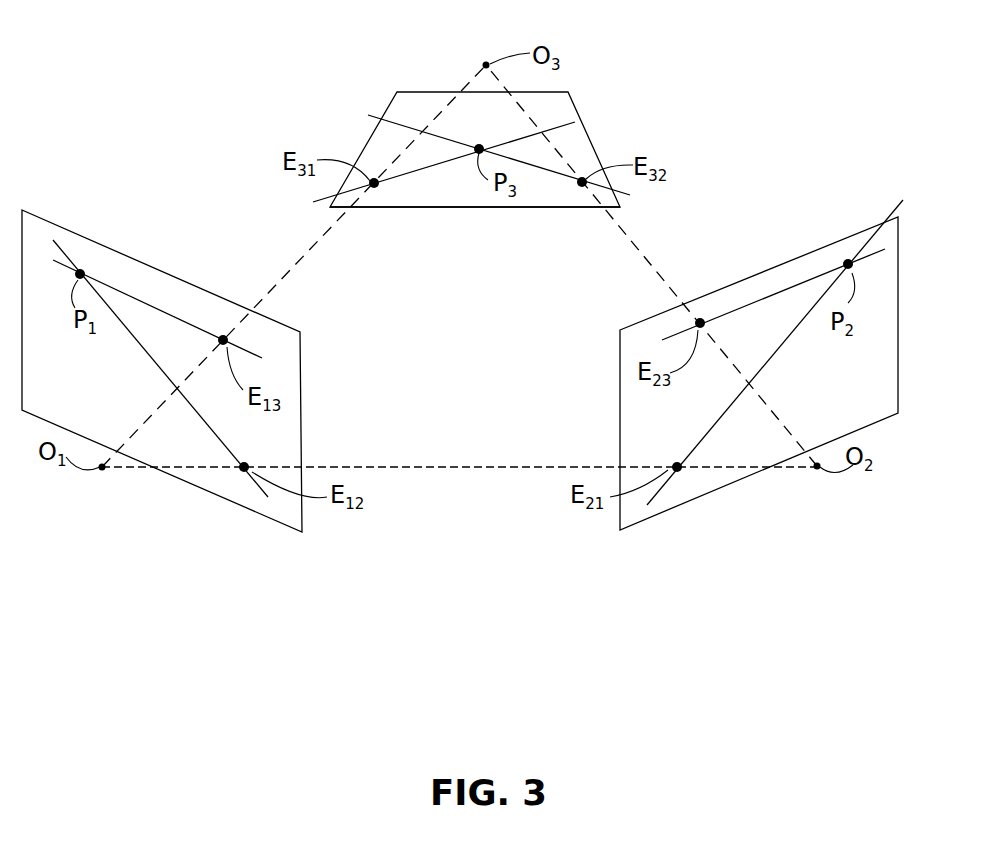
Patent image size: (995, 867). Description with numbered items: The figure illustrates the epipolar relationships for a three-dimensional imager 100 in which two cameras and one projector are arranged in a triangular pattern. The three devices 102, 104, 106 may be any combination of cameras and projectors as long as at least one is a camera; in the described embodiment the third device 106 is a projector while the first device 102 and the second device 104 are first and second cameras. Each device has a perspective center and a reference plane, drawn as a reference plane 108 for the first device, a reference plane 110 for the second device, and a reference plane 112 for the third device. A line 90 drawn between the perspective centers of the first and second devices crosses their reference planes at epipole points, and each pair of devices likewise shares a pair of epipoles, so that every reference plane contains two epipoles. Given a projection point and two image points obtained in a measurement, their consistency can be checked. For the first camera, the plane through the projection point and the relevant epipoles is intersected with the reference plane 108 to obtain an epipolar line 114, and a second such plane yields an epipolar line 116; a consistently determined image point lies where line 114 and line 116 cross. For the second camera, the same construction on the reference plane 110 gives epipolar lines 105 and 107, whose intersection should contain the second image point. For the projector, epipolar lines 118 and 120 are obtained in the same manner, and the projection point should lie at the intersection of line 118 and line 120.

The 3D imager 100 is at (207, 72).
The device 1 102 is at (132, 205).
The device 2 104 is at (793, 212).
The device 3 106 is at (423, 65).
The epipolar line 105 is at (798, 280).
The epipolar line 107 is at (800, 321).
The reference plane 108 is at (288, 326).
The reference plane 110 is at (640, 322).
The reference plane 112 is at (423, 210).
The epipolar line 114 is at (118, 290).
The epipolar line 116 is at (124, 325).
The epipolar line 118 is at (548, 165).
The epipolar line 120 is at (423, 167).
The line 90 is at (457, 465).